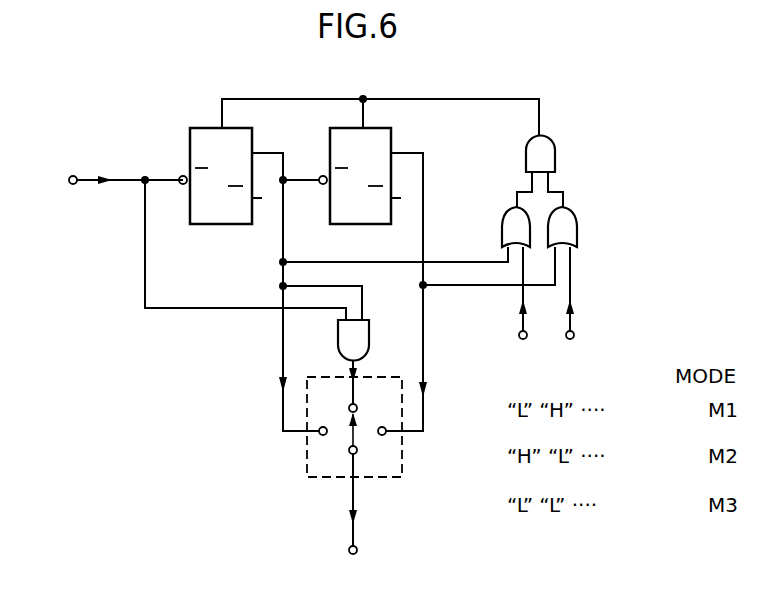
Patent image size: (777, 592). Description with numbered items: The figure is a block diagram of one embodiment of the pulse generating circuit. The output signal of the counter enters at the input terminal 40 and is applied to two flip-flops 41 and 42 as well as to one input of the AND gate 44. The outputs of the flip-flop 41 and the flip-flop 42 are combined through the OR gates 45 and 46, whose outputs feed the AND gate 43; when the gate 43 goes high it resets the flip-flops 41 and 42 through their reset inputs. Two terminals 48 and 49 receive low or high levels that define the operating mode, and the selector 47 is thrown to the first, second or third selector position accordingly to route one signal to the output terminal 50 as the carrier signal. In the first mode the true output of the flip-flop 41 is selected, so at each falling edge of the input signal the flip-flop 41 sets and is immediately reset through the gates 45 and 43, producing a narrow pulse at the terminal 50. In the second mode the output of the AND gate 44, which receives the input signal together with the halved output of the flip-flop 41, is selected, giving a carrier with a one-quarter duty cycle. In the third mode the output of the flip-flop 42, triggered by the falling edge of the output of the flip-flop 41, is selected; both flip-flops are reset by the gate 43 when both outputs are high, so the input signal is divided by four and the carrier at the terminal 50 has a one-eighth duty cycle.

The input terminal 40 is at (75, 176).
The flip-flop 41 is at (253, 129).
The flip-flop 42 is at (392, 129).
The AND gate 43 is at (556, 148).
The AND gate 44 is at (370, 345).
The OR gate 45 is at (503, 225).
The OR gate 46 is at (578, 229).
The selector 47 is at (306, 478).
The terminal 48 is at (522, 340).
The terminal 49 is at (569, 340).
The output terminal 50 is at (358, 552).